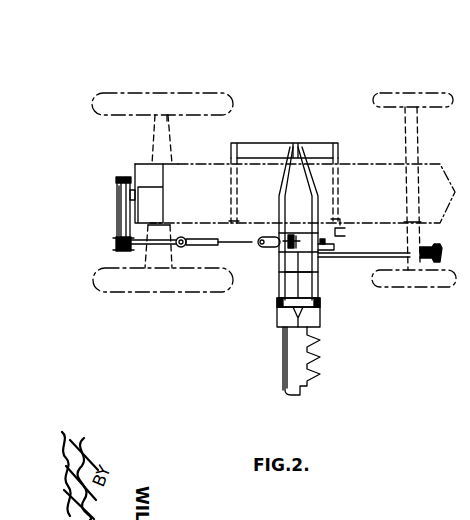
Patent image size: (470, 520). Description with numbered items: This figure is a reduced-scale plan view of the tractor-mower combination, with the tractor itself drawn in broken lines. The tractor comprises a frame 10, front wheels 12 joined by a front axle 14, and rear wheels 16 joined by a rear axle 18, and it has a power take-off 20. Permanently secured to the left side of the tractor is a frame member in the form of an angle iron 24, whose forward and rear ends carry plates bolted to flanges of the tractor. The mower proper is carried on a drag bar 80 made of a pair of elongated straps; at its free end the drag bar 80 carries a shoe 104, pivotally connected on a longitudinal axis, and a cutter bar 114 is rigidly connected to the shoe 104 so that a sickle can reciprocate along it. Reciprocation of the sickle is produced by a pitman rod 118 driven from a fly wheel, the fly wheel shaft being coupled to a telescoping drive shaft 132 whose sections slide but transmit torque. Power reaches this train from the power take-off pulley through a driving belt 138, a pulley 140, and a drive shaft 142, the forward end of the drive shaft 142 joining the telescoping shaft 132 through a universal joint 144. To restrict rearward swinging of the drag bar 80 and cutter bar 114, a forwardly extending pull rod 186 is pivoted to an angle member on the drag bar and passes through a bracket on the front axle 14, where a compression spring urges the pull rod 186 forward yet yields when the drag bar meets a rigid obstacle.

The frame 10 is at (382, 162).
The front wheels 12 is at (418, 93).
The front axle 14 is at (418, 135).
The rear wheels 16 is at (197, 93).
The rear axle 18 is at (170, 143).
The power take-off 20 is at (117, 186).
The angle iron 24 is at (266, 143).
The drag bar 80 is at (279, 206).
The shoe 104 is at (320, 320).
The cutter bar 114 is at (285, 360).
The pitman rod 118 is at (300, 268).
The telescoping drive shaft 132 is at (243, 249).
The driving belt 138 is at (118, 223).
The pulley 140 is at (115, 242).
The drive shaft 142 is at (143, 250).
The universal joint 144 is at (179, 237).
The pull rod 186 is at (369, 254).